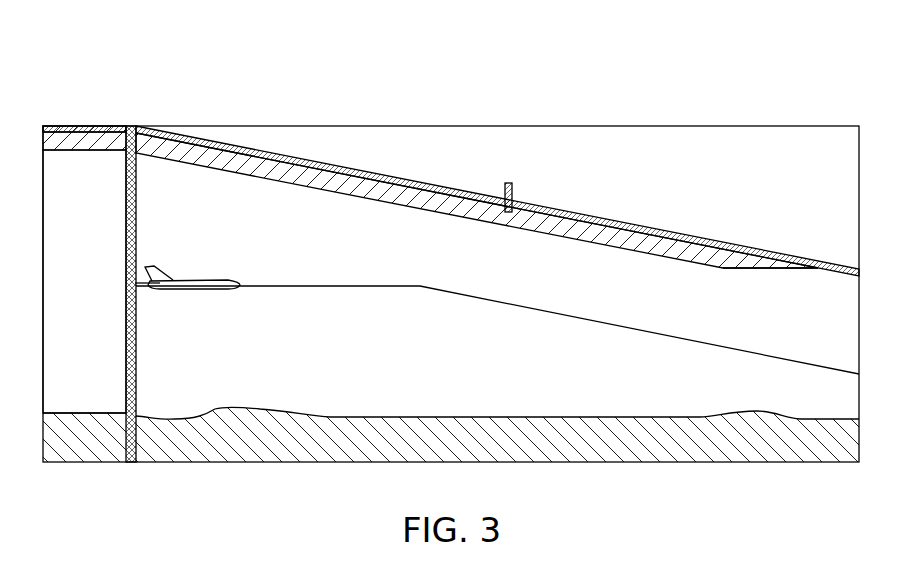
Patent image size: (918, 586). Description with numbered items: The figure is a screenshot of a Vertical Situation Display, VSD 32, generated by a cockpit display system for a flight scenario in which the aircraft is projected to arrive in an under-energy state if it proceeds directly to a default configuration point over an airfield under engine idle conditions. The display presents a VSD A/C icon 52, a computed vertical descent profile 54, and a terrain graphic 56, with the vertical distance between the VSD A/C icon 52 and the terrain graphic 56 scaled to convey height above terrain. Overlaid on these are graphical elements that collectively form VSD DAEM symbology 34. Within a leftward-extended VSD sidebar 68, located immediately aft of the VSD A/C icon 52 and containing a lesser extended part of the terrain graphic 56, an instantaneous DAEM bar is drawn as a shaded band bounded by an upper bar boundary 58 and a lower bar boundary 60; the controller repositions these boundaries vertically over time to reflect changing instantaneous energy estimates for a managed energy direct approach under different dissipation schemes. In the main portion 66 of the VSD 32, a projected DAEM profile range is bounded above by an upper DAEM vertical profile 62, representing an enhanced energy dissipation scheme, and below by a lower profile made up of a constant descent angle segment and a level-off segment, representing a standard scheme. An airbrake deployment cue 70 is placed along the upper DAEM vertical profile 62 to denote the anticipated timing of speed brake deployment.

The Vertical Situation Display (VSD) 32 is at (184, 98).
The VSD DAEM symbology 34 is at (527, 238).
The VSD A/C icon 52 is at (195, 280).
The computed vertical descent profile 54 is at (393, 285).
The terrain graphic 56 is at (449, 416).
The upper bar boundary 58 is at (106, 126).
The lower bar boundary 60 is at (73, 153).
The upper DAEM vertical profile 62 is at (454, 188).
The main portion of VSD 66 is at (849, 161).
The VSD sidebar 68 is at (136, 470).
The airbrake deployment cue 70 is at (510, 183).